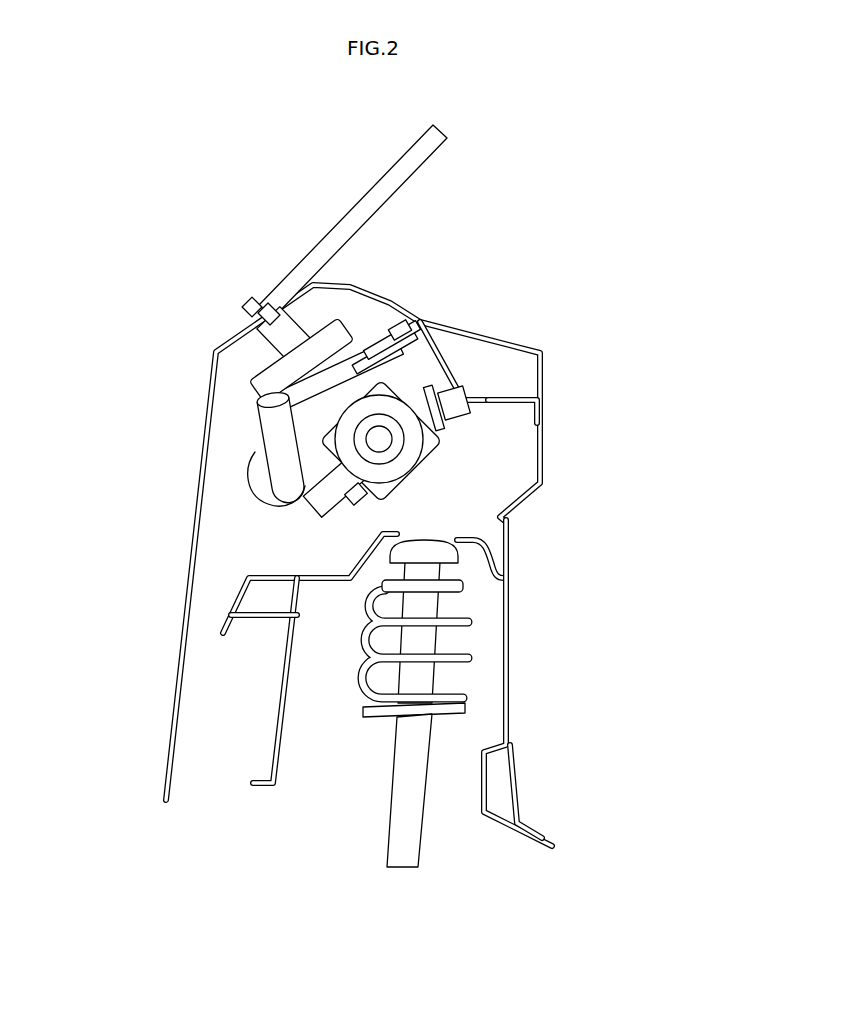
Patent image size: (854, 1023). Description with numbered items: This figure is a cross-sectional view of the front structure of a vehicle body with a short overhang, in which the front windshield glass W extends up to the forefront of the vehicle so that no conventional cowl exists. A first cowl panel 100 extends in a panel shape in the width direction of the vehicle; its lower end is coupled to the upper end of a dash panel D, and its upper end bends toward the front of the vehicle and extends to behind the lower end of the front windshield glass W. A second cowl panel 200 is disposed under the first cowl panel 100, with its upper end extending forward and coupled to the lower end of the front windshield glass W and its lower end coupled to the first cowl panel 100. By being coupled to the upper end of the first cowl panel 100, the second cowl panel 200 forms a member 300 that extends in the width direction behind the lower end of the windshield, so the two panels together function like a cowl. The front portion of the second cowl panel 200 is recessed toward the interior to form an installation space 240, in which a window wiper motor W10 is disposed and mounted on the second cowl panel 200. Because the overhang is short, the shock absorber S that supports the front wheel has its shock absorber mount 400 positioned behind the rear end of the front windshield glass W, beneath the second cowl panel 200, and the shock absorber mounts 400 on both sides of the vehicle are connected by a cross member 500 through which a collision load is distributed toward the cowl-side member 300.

The first cowl panel 100 is at (485, 330).
The second cowl panel 200 is at (367, 290).
The installation space 240 is at (364, 322).
The member 300 is at (562, 359).
The shock absorber mount 400 is at (478, 538).
The cross member 500 is at (260, 597).
The front windshield glass W is at (385, 180).
The window wiper motor W10 is at (307, 442).
The dash panel D is at (512, 652).
The shock absorber S is at (403, 772).